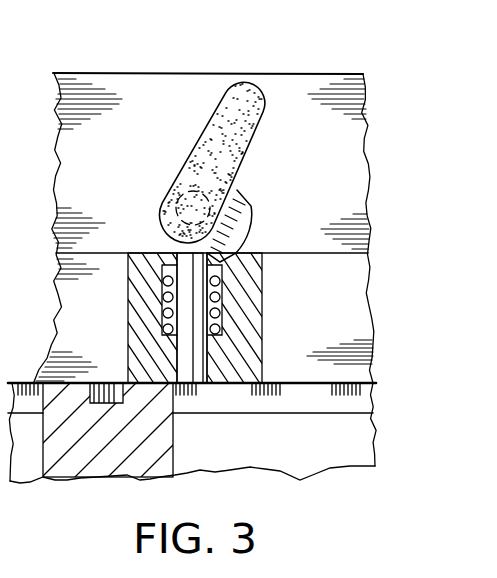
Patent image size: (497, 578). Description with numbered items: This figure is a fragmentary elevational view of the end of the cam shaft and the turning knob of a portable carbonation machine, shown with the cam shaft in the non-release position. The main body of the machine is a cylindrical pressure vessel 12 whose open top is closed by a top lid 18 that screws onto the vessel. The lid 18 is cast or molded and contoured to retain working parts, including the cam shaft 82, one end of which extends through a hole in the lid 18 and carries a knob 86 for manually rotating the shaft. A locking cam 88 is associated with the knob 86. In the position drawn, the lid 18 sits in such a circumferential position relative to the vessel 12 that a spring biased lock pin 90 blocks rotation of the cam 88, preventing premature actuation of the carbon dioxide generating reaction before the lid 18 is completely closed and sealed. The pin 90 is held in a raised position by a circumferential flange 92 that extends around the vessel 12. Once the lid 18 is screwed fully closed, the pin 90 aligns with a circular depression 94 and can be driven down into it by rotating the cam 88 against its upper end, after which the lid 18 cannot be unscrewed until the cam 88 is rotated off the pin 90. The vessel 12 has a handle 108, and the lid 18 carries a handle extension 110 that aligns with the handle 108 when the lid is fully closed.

The pressure vessel 12 is at (368, 452).
The top lid 18 is at (140, 73).
The cam shaft 82 is at (178, 196).
The knob 86 is at (255, 82).
The locking cam 88 is at (250, 205).
The spring biased lock pin 90 is at (212, 363).
The circumferential flange 92 is at (371, 391).
The circular depression 94 is at (116, 384).
The handle 108 is at (132, 477).
The handle extension 110 is at (262, 307).